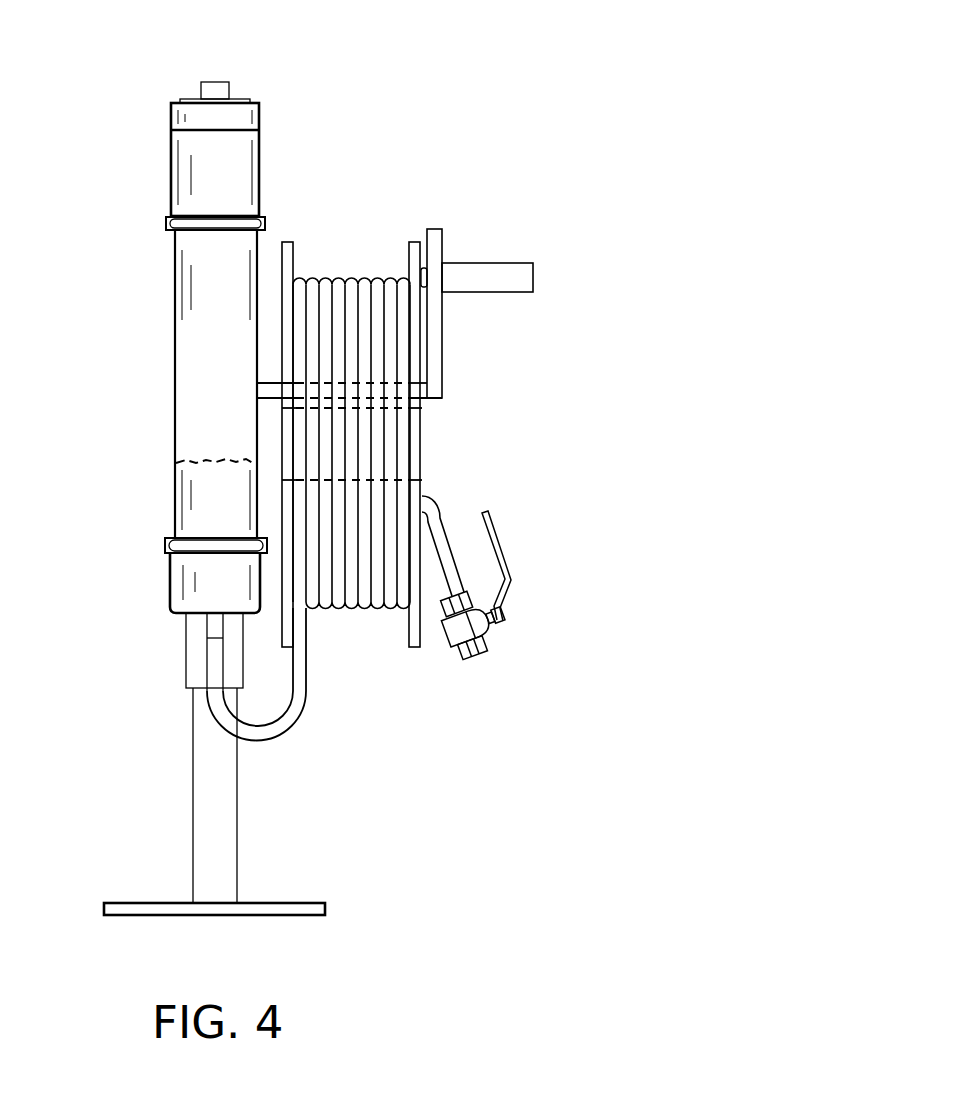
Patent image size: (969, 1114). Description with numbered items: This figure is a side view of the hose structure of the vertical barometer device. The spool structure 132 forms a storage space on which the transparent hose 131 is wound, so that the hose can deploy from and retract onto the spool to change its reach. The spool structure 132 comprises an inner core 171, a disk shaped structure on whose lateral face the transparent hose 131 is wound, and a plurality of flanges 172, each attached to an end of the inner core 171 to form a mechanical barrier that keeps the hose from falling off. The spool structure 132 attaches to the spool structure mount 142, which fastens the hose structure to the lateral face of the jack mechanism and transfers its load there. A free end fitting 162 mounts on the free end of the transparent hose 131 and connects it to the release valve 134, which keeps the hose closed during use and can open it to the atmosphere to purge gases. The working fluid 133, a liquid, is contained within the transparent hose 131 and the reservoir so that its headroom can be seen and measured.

The transparent hose 131 is at (349, 595).
The spool structure 132 is at (567, 2).
The working fluid 133 is at (215, 495).
The release valve 134 is at (508, 600).
The spool structure mount 142 is at (435, 347).
The free end fitting 162 is at (450, 610).
The inner core 171 is at (360, 408).
The plurality of flanges 172 is at (417, 242).